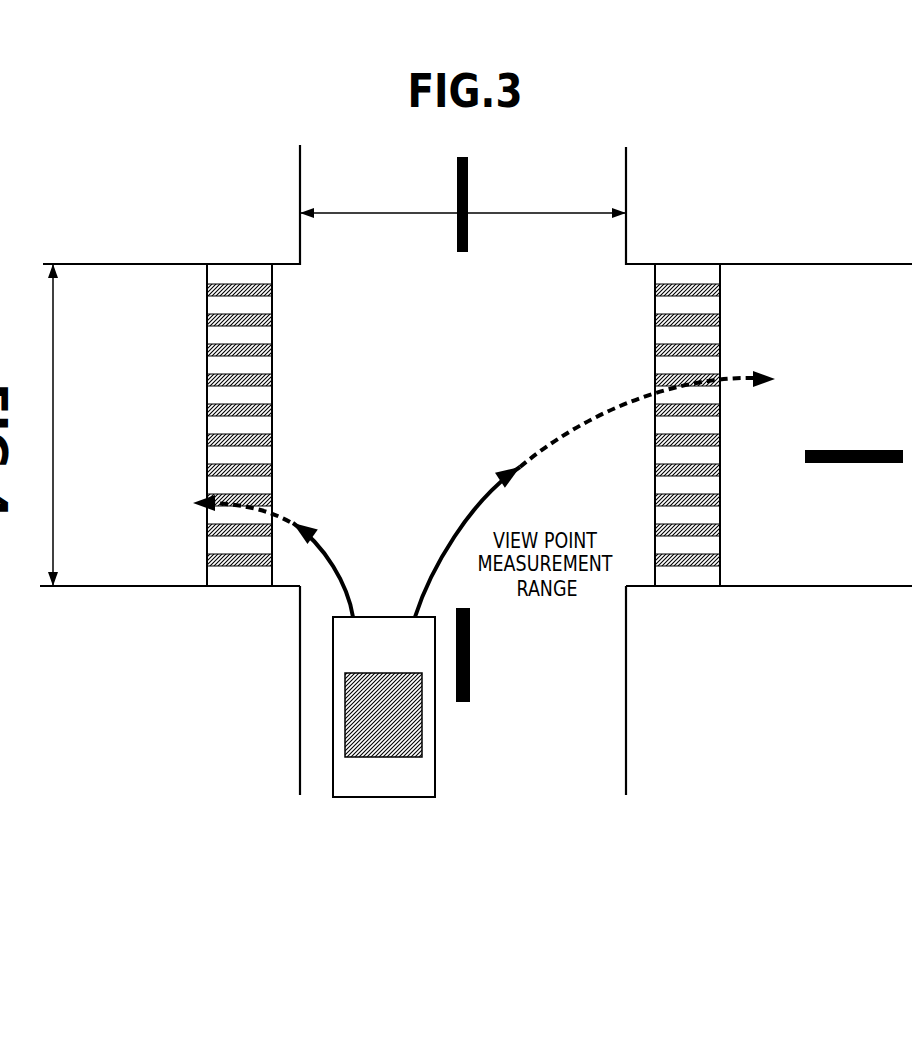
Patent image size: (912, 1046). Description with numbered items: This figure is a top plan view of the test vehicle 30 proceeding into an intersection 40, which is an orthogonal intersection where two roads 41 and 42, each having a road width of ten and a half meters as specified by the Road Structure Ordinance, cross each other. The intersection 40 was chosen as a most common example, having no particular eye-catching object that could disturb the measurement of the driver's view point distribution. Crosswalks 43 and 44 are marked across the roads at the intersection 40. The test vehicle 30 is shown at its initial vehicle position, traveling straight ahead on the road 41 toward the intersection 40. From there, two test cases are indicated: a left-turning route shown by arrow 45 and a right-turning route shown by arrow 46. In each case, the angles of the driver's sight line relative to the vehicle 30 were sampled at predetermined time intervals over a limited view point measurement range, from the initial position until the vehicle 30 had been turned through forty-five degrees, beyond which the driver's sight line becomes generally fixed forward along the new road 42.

The test vehicle 30 is at (435, 780).
The intersection 40 is at (690, 194).
The road 41 is at (300, 657).
The road 42 is at (113, 586).
The crosswalk 43 is at (207, 311).
The crosswalk 44 is at (722, 312).
The arrow 45 is at (338, 568).
The arrow 46 is at (457, 538).